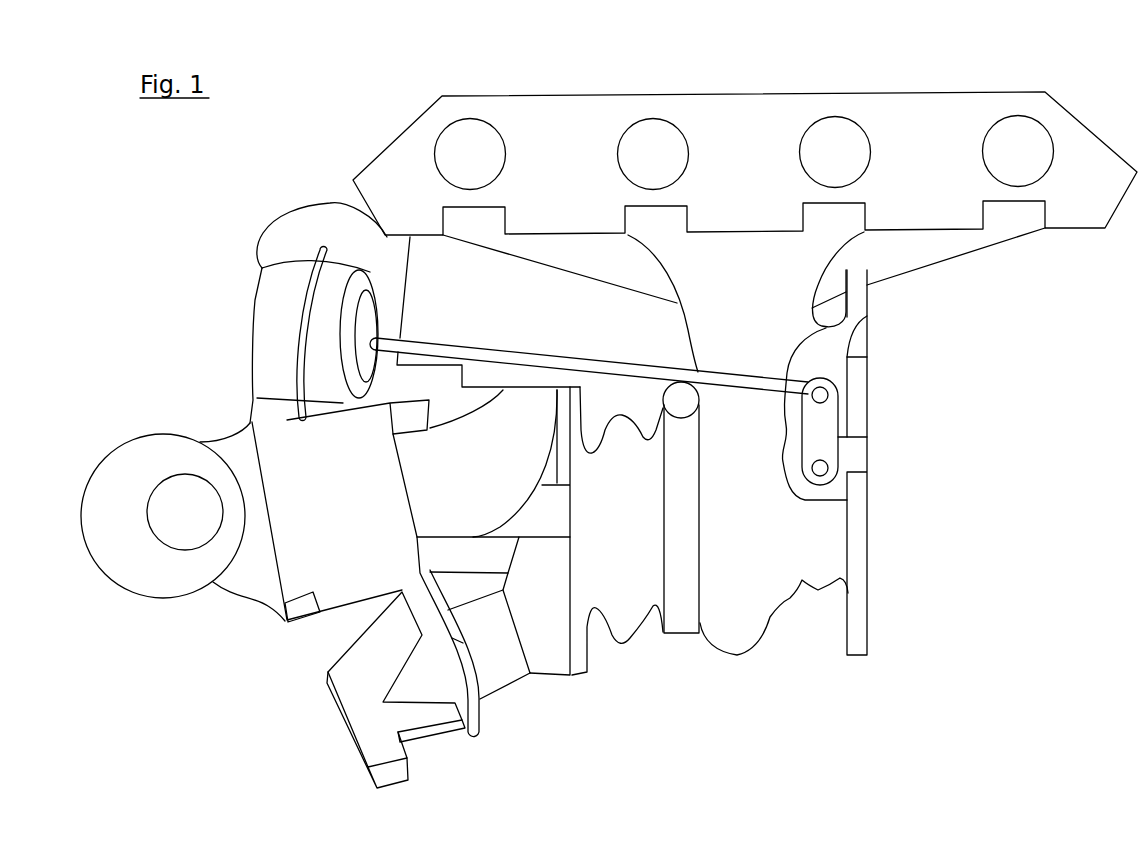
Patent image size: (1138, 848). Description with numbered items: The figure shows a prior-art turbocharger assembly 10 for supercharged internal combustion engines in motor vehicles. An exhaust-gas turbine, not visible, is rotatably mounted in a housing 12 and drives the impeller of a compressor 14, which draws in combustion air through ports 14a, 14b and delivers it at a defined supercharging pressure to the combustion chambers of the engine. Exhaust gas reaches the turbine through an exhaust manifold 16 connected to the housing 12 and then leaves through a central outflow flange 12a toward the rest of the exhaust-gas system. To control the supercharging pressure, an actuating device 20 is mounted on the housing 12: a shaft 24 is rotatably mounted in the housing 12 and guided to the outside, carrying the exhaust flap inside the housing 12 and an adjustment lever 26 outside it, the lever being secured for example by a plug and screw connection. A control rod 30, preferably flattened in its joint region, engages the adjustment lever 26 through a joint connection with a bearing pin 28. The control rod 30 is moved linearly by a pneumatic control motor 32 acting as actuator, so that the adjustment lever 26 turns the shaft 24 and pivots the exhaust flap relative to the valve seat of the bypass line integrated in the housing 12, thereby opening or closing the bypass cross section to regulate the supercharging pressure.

The turbocharger assembly 10 is at (886, 70).
The housing 12 is at (745, 651).
The central outflow flange 12a is at (868, 564).
The compressor 14 is at (511, 698).
The port 14a is at (150, 602).
The port 14b is at (280, 213).
The exhaust manifold 16 is at (960, 250).
The actuating device 20 is at (872, 366).
The shaft 24 is at (837, 470).
The adjustment lever 26 is at (838, 425).
The bearing pin 28 is at (837, 400).
The control rod 30 is at (546, 346).
The pneumatic control motor 32 is at (307, 285).